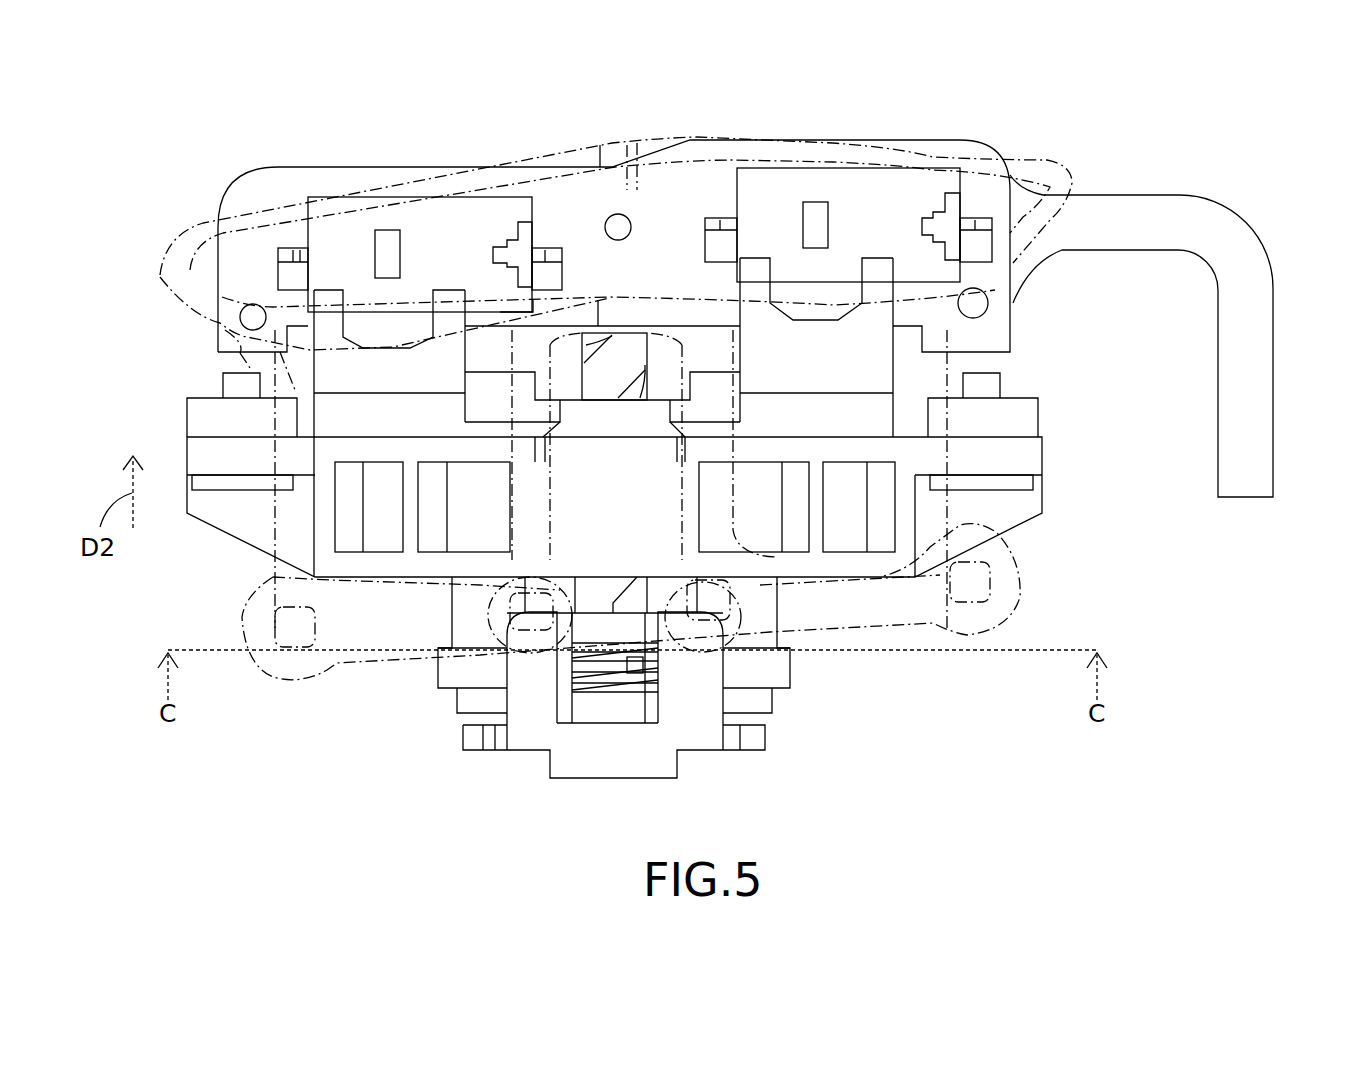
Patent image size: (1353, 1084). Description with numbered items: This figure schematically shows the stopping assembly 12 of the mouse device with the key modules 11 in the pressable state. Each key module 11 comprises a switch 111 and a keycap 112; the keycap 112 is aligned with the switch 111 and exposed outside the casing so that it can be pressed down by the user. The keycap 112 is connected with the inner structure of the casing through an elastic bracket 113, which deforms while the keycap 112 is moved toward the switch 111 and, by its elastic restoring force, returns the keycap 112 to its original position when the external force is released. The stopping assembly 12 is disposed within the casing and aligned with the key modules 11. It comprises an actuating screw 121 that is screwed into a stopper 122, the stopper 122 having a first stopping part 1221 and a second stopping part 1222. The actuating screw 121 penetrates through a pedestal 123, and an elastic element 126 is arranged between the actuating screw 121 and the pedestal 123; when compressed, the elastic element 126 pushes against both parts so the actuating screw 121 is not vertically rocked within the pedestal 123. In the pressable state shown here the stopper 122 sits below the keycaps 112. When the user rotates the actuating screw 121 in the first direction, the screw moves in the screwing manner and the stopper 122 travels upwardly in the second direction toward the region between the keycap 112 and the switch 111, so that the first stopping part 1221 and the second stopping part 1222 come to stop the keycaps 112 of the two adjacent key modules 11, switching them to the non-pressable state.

The key module 11 is at (614, 246).
The switch 111 is at (445, 228).
The keycap 112 is at (207, 222).
The elastic bracket 113 is at (255, 590).
The stopping assembly 12 is at (603, 473).
The actuating screw 121 is at (600, 592).
The stopper 122 is at (333, 418).
The first stopping part 1221 is at (367, 377).
The second stopping part 1222 is at (1003, 333).
The pedestal 123 is at (532, 737).
The elastic element 126 is at (625, 672).